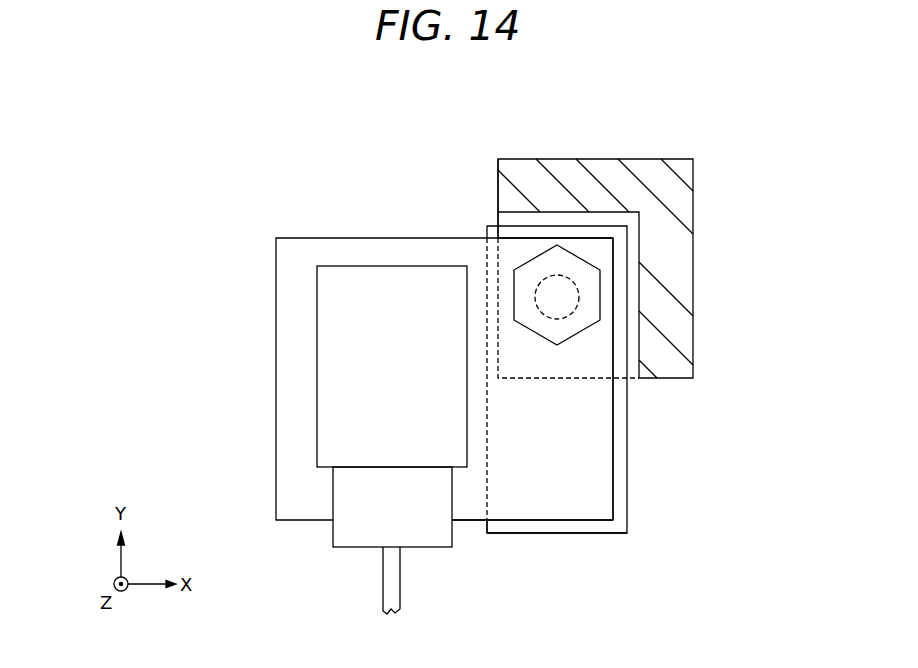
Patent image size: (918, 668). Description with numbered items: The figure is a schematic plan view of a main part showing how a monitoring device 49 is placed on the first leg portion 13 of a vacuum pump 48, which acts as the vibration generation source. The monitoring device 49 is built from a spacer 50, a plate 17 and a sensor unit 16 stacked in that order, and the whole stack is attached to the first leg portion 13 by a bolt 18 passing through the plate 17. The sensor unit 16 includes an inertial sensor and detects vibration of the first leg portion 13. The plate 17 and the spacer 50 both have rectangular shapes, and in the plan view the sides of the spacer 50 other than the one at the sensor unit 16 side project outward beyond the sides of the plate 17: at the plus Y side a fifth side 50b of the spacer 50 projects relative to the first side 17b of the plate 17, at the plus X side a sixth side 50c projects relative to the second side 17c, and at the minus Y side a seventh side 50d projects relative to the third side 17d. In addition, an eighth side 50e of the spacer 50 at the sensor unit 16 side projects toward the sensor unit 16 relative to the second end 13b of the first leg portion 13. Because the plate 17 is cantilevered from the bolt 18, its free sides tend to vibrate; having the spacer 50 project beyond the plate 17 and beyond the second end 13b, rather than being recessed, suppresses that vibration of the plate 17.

The first leg portion 13 is at (678, 207).
The second end 13b is at (498, 285).
The sensor unit 16 is at (394, 277).
The plate 17 is at (327, 247).
The first side 17b is at (543, 238).
The second side 17c is at (615, 467).
The third side 17d is at (548, 521).
The bolt 18 is at (571, 325).
The vacuum pump 48 is at (765, 134).
The monitoring device 49 is at (259, 171).
The spacer 50 is at (604, 349).
The fifth side 50b is at (605, 238).
The sixth side 50c is at (627, 512).
The seventh side 50d is at (603, 534).
The eighth side 50e is at (482, 523).